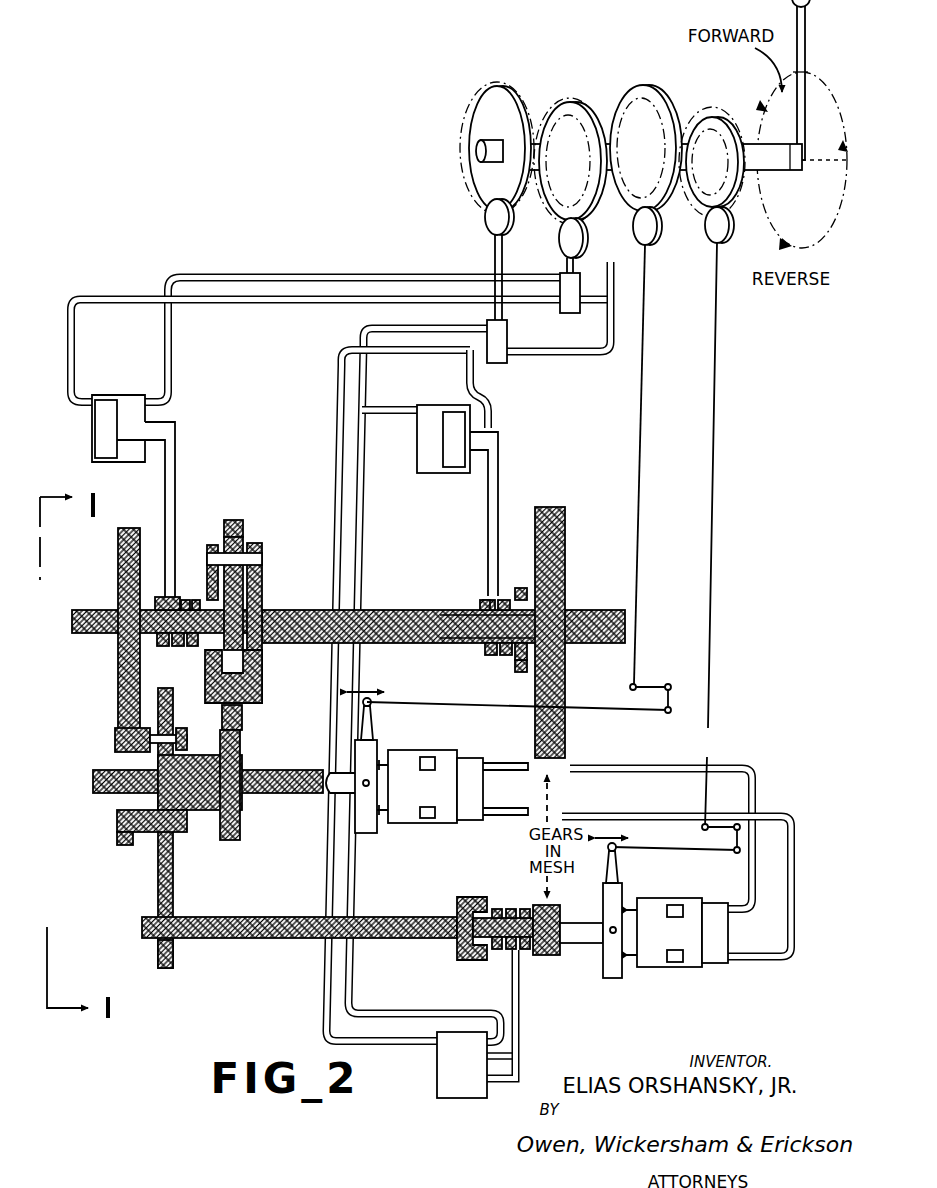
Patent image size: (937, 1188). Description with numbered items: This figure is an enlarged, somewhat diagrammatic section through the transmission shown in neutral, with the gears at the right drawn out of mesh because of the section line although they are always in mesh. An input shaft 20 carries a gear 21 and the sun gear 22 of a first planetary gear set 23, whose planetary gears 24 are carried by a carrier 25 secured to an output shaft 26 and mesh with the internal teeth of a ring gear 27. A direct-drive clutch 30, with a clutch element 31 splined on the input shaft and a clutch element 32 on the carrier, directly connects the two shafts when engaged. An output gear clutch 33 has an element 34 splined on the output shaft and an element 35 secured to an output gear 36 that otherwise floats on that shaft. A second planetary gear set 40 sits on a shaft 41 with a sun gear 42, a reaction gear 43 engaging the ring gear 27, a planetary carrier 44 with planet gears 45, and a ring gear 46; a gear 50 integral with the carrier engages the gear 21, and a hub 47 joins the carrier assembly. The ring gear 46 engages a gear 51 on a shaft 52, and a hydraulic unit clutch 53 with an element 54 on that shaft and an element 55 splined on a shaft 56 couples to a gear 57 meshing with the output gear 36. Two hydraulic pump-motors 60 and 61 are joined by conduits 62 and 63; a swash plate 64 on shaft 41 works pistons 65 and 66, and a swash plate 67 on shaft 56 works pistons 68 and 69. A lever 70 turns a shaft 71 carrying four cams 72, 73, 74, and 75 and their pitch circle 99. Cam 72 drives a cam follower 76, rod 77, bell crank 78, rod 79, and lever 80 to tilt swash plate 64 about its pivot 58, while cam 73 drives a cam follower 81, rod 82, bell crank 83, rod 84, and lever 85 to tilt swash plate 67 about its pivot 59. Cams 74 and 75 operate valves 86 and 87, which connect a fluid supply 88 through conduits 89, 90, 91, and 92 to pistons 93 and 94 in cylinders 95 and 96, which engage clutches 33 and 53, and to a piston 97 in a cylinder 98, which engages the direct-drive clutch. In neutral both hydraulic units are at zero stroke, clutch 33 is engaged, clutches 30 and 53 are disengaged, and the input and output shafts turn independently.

The input shaft 20 is at (90, 633).
The gear 21 is at (118, 553).
The sun gear 22 is at (262, 588).
The first planetary gear set 23 is at (266, 606).
The planetary gears 24 is at (262, 560).
The carrier 25 is at (262, 667).
The output shaft 26 is at (366, 644).
The ring gear 27 is at (245, 520).
The direct-drive clutch 30 is at (178, 572).
The clutch element 31 is at (160, 597).
The clutch element 32 is at (207, 580).
The output gear clutch 33 is at (490, 596).
The clutch element 34 is at (484, 604).
The clutch element 35 is at (522, 590).
The output gear 36 is at (565, 546).
The second planetary gear set 40 is at (215, 820).
The shaft 41 is at (340, 770).
The sun gear 42 is at (102, 793).
The reaction gear 43 is at (241, 832).
The planetary carrier 44 is at (117, 836).
The planet gears 45 is at (180, 735).
The ring gear 46 is at (164, 692).
The hub 47 is at (240, 760).
The gear 50 is at (115, 736).
The gear 51 is at (158, 958).
The shaft 52 is at (330, 939).
The hydraulic unit clutch 53 is at (500, 954).
The clutch element 54 is at (466, 960).
The clutch element 55 is at (514, 950).
The shaft 56 is at (560, 953).
The gear 57 is at (556, 905).
The pivot 58 is at (362, 786).
The pivot 59 is at (611, 934).
The hydraulic pump-motor 60 is at (456, 752).
The hydraulic pump-motor 61 is at (696, 962).
The conduit 62 is at (696, 766).
The conduit 63 is at (793, 890).
The swash plate 64 is at (366, 834).
The piston 65 is at (429, 757).
The piston 66 is at (430, 819).
The swash plate 67 is at (616, 884).
The piston 68 is at (680, 905).
The piston 69 is at (678, 963).
The lever 70 is at (806, 19).
The shaft 71 is at (768, 170).
The cam 72 is at (640, 96).
The cam 73 is at (724, 116).
The cam 74 is at (488, 118).
The cam 75 is at (560, 110).
The cam follower 76 is at (656, 236).
The rod 77 is at (642, 456).
The bell crank 78 is at (658, 711).
The rod 79 is at (477, 706).
The lever 80 is at (373, 722).
The cam follower 81 is at (728, 235).
The rod 82 is at (709, 530).
The bell crank 83 is at (736, 853).
The rod 84 is at (695, 850).
The lever 85 is at (658, 860).
The valve 86 is at (508, 360).
The valve 87 is at (574, 313).
The fluid supply 88 is at (606, 266).
The conduit 89 is at (432, 354).
The conduit 90 is at (434, 330).
The conduit 91 is at (296, 302).
The conduit 92 is at (266, 276).
The piston 93 is at (450, 468).
The piston 94 is at (474, 1093).
The cylinder 95 is at (417, 450).
The cylinder 96 is at (437, 1070).
The piston 97 is at (96, 433).
The cylinder 98 is at (126, 463).
The pitch circle 99 is at (702, 118).